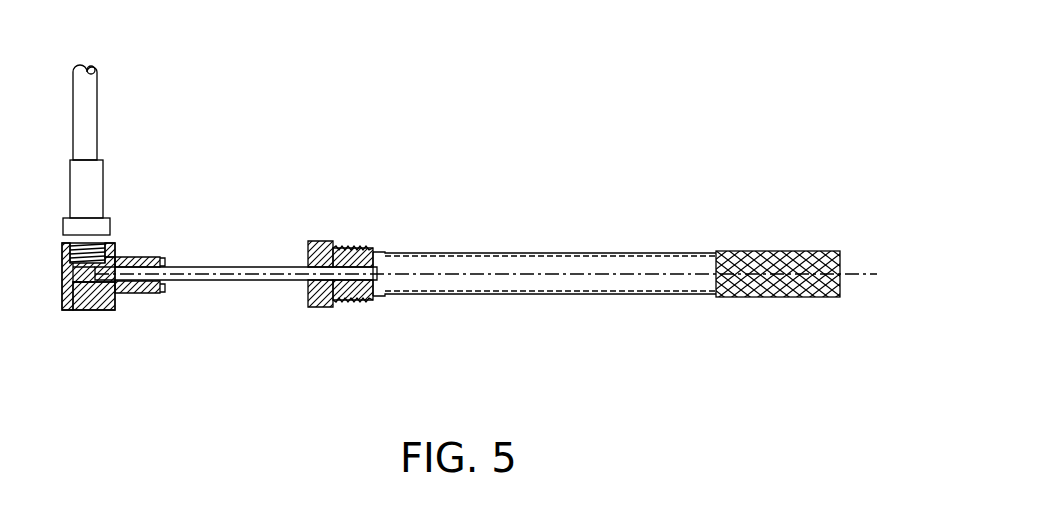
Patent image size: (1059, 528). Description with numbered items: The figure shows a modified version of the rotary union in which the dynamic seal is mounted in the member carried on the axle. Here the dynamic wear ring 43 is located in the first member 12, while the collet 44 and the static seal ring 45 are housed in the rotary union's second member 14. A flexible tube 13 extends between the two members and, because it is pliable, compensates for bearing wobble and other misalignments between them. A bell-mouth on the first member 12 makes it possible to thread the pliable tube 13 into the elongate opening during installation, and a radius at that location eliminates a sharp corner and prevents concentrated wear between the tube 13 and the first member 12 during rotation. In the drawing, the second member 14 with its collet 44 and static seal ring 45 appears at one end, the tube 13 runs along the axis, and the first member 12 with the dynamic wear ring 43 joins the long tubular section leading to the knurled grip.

The first member 12 is at (320, 308).
The flexible tube 13 is at (268, 283).
The second member 14 is at (62, 247).
The dynamic wear ring 43 is at (360, 262).
The collet 44 is at (158, 294).
The static seal ring 45 is at (62, 304).